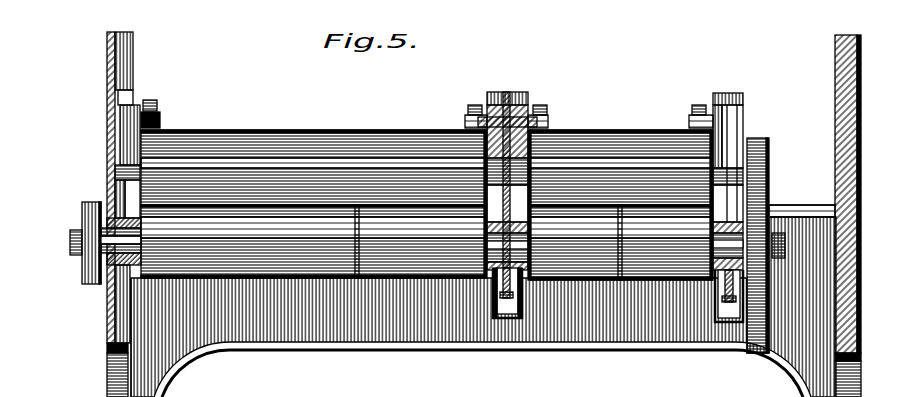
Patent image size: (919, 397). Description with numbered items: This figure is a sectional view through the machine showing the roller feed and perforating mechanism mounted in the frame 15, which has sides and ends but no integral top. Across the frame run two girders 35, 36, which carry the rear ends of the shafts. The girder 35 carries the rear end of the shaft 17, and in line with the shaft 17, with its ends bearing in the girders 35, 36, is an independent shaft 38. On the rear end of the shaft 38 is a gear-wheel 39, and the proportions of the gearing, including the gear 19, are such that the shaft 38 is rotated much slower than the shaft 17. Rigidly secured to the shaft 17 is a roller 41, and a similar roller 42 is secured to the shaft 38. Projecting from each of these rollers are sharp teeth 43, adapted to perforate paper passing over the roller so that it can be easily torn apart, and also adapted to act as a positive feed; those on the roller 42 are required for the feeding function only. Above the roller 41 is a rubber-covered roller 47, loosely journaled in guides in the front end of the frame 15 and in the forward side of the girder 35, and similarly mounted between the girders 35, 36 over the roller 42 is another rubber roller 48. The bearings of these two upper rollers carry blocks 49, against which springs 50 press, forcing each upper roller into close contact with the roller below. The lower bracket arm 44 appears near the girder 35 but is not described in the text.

The frame 15 is at (107, 50).
The shaft 17 is at (113, 243).
The gear 19 is at (88, 215).
The girder 35 is at (507, 318).
The girder 36 is at (740, 95).
The independent shaft 38 is at (524, 290).
The gear-wheel 39 is at (769, 193).
The roller 41 is at (314, 204).
The roller 42 is at (620, 205).
The sharp teeth 43 is at (366, 239).
The bracket arm 44 is at (476, 283).
The rubber-covered roller 47 is at (332, 130).
The rubber roller 48 is at (622, 130).
The block 49 is at (130, 113).
The spring 50 is at (152, 104).